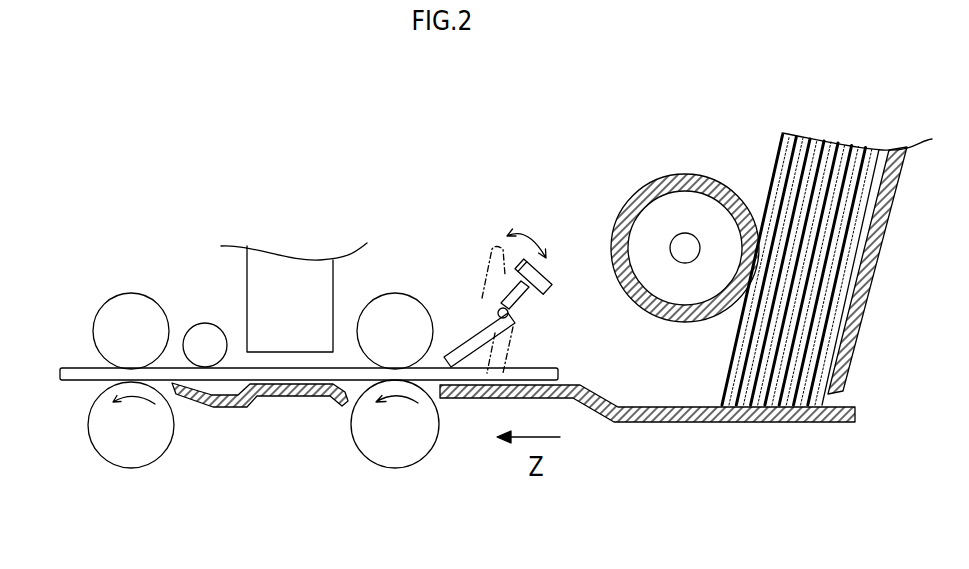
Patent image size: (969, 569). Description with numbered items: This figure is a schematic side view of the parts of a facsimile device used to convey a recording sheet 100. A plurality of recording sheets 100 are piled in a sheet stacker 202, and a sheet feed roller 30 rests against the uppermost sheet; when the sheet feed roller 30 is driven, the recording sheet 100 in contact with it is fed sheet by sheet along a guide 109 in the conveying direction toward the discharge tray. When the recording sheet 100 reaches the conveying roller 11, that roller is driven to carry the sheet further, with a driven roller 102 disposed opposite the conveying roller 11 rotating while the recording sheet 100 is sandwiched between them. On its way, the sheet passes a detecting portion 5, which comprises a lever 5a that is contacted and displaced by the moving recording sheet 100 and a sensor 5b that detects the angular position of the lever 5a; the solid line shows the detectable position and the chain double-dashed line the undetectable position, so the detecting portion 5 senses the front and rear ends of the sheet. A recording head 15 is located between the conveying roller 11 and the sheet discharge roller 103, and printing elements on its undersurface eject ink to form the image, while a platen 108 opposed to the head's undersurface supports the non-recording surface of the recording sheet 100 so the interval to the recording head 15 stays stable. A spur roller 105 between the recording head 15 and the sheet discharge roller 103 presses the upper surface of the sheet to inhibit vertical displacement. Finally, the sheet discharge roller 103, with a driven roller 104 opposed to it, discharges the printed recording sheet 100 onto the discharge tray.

The recording sheet 100 is at (75, 373).
The driven roller 104 is at (133, 318).
The spur roller 105 is at (198, 338).
The recording head 15 is at (295, 275).
The driven roller 102 is at (402, 317).
The sheet discharge roller 103 is at (143, 448).
The conveying roller 11 is at (403, 443).
The platen 108 is at (273, 395).
The guide 109 is at (642, 425).
The detecting portion 5 is at (514, 268).
The lever 5a is at (473, 347).
The sensor 5b is at (542, 292).
The sheet feed roller 30 is at (648, 222).
The sheet stacker 202 is at (750, 154).